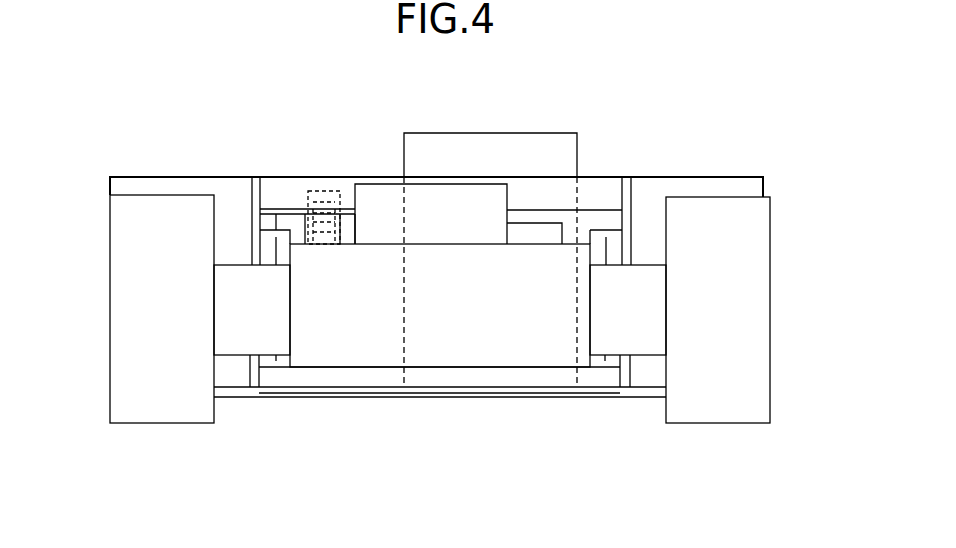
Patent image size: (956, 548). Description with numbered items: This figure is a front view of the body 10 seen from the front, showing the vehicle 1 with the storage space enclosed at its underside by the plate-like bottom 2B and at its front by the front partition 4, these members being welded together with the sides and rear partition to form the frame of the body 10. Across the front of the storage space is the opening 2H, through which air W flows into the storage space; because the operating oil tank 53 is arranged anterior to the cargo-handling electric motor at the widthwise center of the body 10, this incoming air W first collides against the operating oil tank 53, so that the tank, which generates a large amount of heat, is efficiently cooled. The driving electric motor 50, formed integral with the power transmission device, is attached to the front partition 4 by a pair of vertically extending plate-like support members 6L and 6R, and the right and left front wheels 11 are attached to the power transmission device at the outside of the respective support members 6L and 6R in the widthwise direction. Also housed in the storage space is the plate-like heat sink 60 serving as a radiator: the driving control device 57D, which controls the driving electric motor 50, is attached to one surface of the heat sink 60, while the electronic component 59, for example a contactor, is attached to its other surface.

The vehicle 1 is at (124, 116).
The bottom 2B is at (531, 399).
The opening 2H is at (312, 376).
The front partition 4 is at (728, 178).
The support member 6R is at (255, 181).
The support member 6L is at (627, 185).
The body 10 is at (474, 403).
The front wheel 11 is at (120, 278).
The driving electric motor 50 is at (462, 190).
The operating oil tank 53 is at (543, 146).
The driving control device 57D is at (292, 221).
The electronic component 59 is at (347, 224).
The heat sink 60 is at (316, 228).
The air W is at (380, 164).